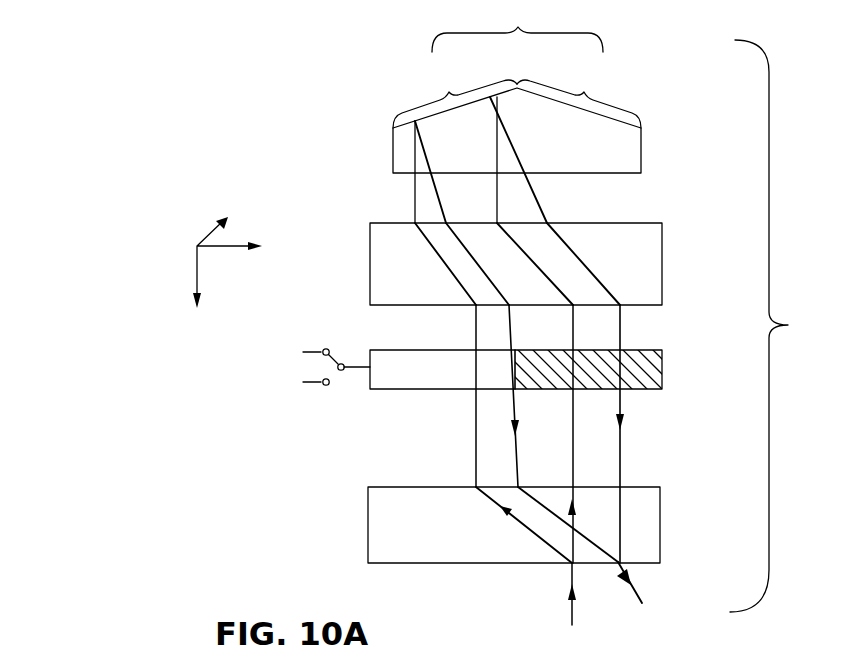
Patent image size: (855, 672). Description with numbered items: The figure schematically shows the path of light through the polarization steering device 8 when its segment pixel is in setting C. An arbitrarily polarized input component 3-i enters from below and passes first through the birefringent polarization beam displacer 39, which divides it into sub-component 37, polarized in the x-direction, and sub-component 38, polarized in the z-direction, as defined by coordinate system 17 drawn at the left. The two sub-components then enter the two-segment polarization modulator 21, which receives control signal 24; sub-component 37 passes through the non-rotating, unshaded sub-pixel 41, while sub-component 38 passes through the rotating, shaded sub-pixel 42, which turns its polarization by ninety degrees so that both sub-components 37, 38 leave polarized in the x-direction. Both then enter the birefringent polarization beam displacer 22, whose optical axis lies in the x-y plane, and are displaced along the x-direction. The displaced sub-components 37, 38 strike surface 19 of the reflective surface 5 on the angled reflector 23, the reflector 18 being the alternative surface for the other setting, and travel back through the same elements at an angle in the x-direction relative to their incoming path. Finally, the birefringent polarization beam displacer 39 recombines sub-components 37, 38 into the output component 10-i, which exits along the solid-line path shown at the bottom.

The reflective surface 5 is at (517, 26).
The reflector 19 is at (455, 94).
The reflector 18 is at (579, 94).
The angled reflector 23 is at (620, 148).
The birefringent polarization beam displacer 22 is at (640, 262).
The polarization modulator 21 is at (668, 350).
The sub-pixel 42 is at (643, 355).
The sub-pixel 41 is at (381, 359).
The control signal 24 is at (352, 371).
The sub-component 37 is at (476, 420).
The sub-component 38 is at (573, 408).
The birefringent polarization beam displacer 39 is at (653, 520).
The polarization steering device 8 is at (771, 326).
The coordinate system 17 is at (178, 212).
The input component 3-i is at (572, 609).
The output component 10-i is at (641, 598).